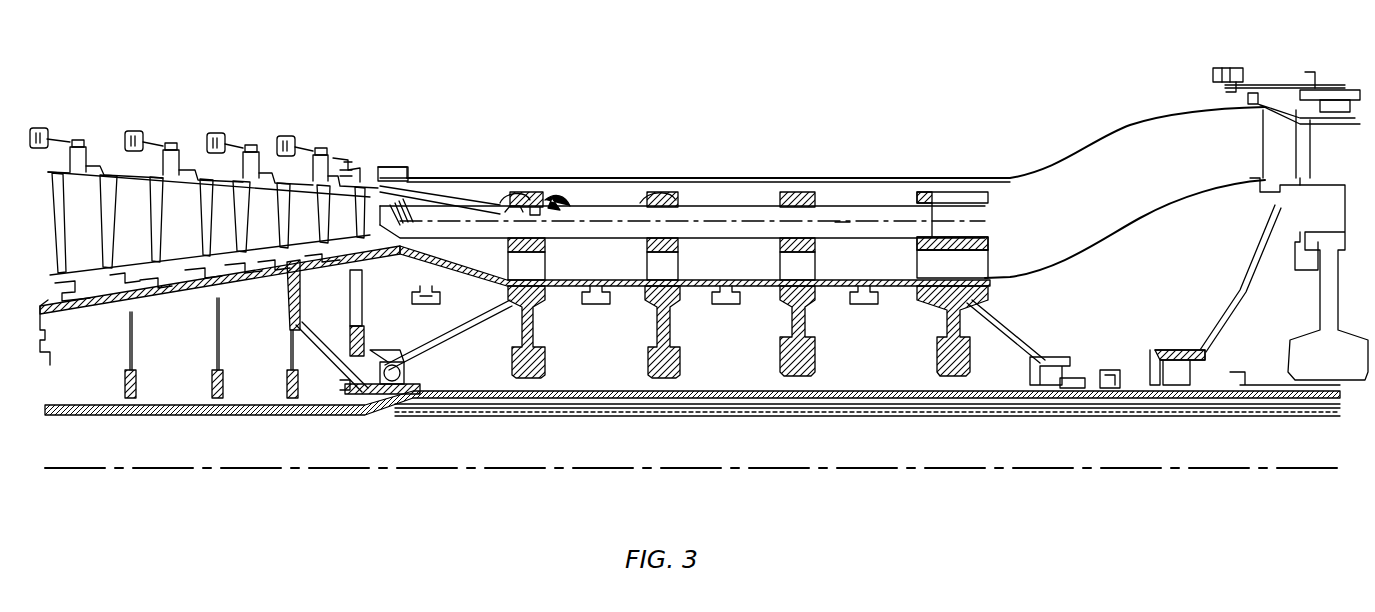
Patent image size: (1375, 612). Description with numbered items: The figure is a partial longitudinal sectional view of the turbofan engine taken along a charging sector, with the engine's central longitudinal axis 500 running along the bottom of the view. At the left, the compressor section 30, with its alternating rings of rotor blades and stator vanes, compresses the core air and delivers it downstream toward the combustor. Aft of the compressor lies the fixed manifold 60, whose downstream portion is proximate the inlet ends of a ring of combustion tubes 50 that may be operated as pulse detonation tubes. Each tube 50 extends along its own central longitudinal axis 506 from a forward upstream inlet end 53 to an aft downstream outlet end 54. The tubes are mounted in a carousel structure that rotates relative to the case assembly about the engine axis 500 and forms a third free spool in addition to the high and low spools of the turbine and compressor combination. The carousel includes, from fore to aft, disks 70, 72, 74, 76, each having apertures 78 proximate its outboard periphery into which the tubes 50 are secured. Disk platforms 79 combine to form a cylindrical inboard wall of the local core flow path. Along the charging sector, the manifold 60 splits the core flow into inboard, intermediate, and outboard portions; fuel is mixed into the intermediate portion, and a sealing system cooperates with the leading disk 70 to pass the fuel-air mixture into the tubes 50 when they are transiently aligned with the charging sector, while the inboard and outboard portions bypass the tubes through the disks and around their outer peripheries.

The compressor section 30 is at (202, 122).
The fixed manifold 60 is at (433, 170).
The apertures 78 is at (488, 198).
The forward upstream inlet end 53 is at (558, 204).
The combustion tubes 50 is at (735, 206).
The aft downstream outlet end 54 is at (940, 209).
The disk platforms 79 is at (561, 287).
The central longitudinal axis 506 is at (840, 230).
The disk 70 is at (530, 386).
The disk 72 is at (665, 386).
The disk 74 is at (798, 386).
The disk 76 is at (953, 386).
The central longitudinal axis 500 is at (906, 472).